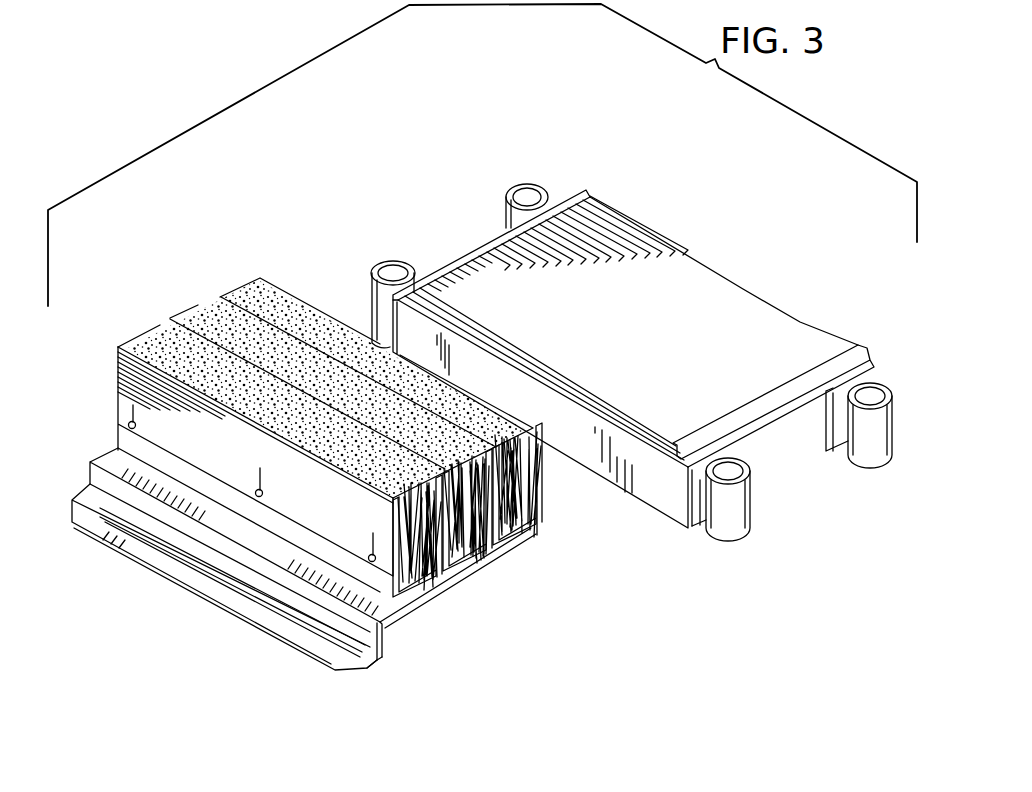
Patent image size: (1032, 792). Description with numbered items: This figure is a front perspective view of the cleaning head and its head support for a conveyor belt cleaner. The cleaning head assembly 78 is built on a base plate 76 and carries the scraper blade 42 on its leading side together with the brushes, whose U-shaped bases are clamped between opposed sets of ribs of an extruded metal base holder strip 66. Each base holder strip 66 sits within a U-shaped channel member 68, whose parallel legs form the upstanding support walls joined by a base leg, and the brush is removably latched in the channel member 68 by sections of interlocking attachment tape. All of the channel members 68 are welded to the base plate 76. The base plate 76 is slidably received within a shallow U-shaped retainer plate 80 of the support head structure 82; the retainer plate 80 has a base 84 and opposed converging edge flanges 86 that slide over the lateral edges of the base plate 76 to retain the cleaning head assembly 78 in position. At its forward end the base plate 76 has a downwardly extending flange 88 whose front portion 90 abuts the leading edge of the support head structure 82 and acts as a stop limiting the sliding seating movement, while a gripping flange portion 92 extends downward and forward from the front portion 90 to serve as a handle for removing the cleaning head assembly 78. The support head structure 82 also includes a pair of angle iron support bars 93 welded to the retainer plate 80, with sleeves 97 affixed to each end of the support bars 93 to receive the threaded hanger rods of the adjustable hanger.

The scraper blade 42 is at (130, 379).
The base holder strip 66 is at (462, 556).
The U-shaped channel member 68 is at (560, 518).
The base plate 76 is at (108, 458).
The cleaning head assembly 78 is at (342, 591).
The retainer plate 80 is at (634, 362).
The support head structure 82 is at (783, 298).
The base 84 is at (605, 224).
The edge flanges 86 is at (575, 190).
The downwardly extending flange 88 is at (389, 641).
The front portion 90 is at (379, 652).
The gripping flange portion 92 is at (300, 640).
The angle iron support bars 93 is at (662, 503).
The sleeves 97 is at (515, 190).